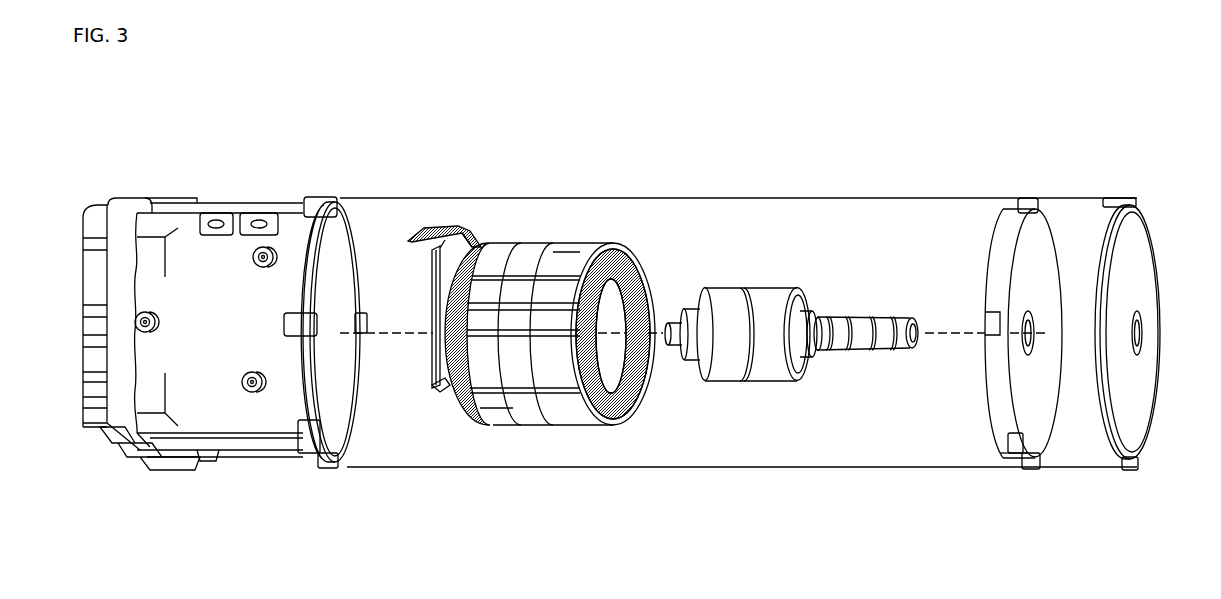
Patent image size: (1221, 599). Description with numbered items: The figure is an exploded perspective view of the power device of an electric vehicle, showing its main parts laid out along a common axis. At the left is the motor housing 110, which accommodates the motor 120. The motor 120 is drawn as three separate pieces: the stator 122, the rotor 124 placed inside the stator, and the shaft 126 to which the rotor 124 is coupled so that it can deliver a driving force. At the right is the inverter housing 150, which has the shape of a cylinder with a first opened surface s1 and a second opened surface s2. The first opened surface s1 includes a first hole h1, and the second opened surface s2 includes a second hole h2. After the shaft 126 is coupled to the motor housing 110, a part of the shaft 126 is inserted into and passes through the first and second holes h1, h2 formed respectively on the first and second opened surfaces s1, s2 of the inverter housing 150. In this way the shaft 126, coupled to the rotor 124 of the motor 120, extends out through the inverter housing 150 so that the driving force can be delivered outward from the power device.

The motor housing 110 is at (250, 199).
The motor 120 is at (663, 398).
The stator 122 is at (628, 410).
The rotor 124 is at (750, 360).
The shaft 126 is at (866, 423).
The inverter housing 150 is at (1093, 315).
The first opened surface s1 is at (1038, 354).
The second opened surface s2 is at (1148, 334).
The first hole h1 is at (1034, 336).
The second hole h2 is at (1142, 336).